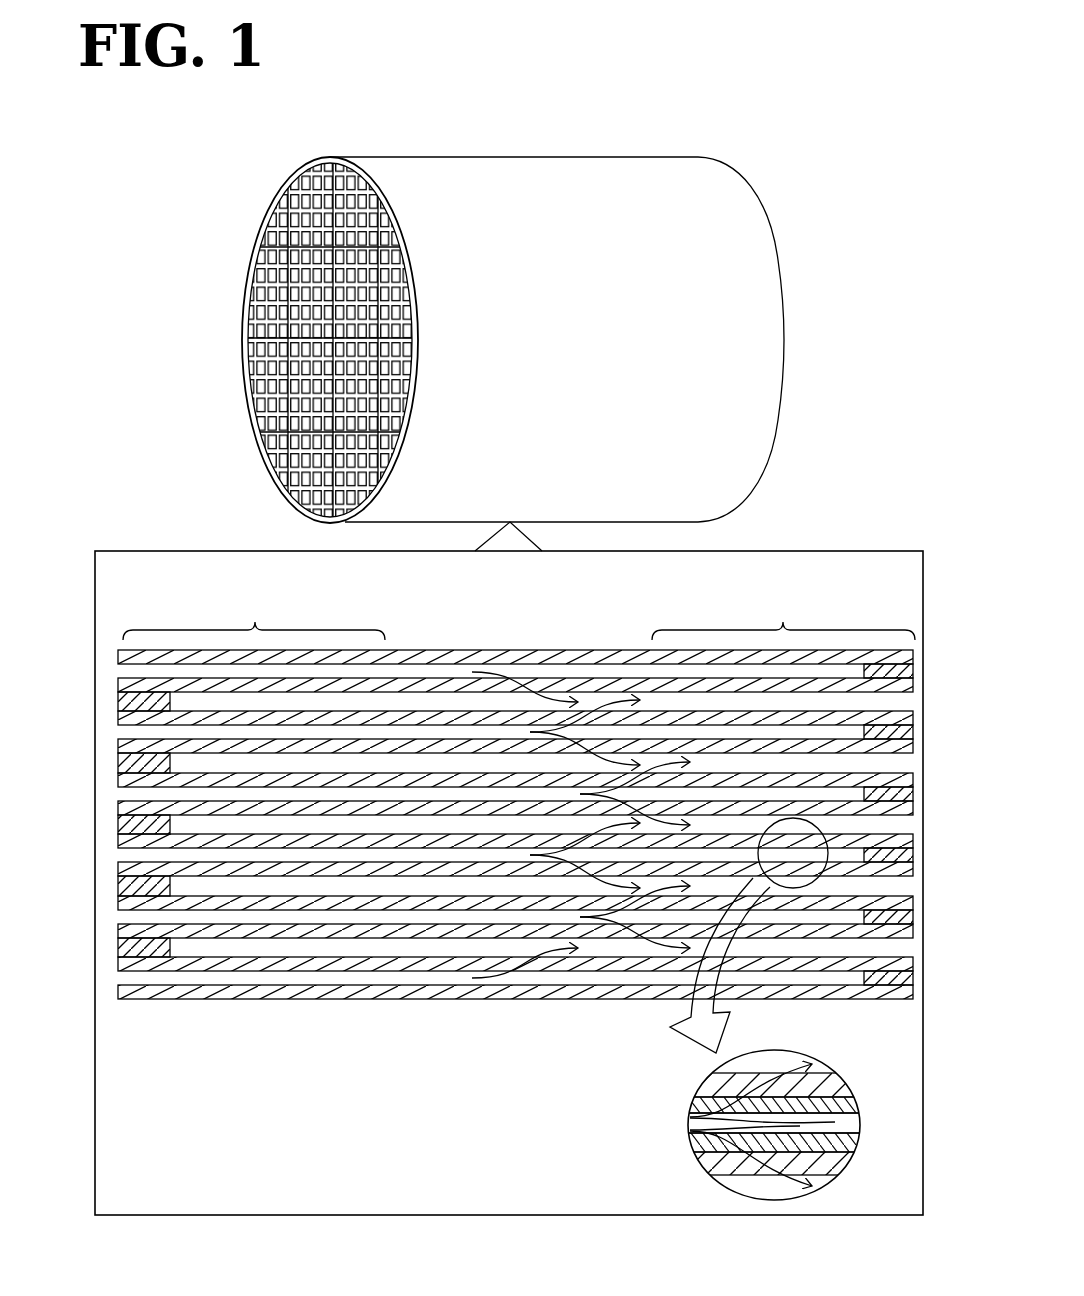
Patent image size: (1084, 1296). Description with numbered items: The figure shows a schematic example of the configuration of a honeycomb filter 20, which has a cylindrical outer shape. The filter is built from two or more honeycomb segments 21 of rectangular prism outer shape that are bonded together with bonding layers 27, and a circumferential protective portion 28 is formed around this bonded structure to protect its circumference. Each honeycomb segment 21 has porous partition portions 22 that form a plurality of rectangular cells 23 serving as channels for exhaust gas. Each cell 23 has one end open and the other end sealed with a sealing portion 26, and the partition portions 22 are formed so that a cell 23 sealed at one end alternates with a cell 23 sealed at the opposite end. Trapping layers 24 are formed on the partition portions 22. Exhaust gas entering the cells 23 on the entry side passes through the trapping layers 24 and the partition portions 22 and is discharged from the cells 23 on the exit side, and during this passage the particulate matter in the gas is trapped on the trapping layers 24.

The honeycomb filter 20 is at (669, 140).
The honeycomb segment 21 is at (245, 357).
The partition portion 22 is at (337, 1001).
The cell 23 is at (833, 1120).
The trapping layer 24 is at (380, 998).
The sealing portion 26 is at (260, 246).
The bonding layer 27 is at (330, 158).
The circumferential protective portion 28 is at (283, 188).